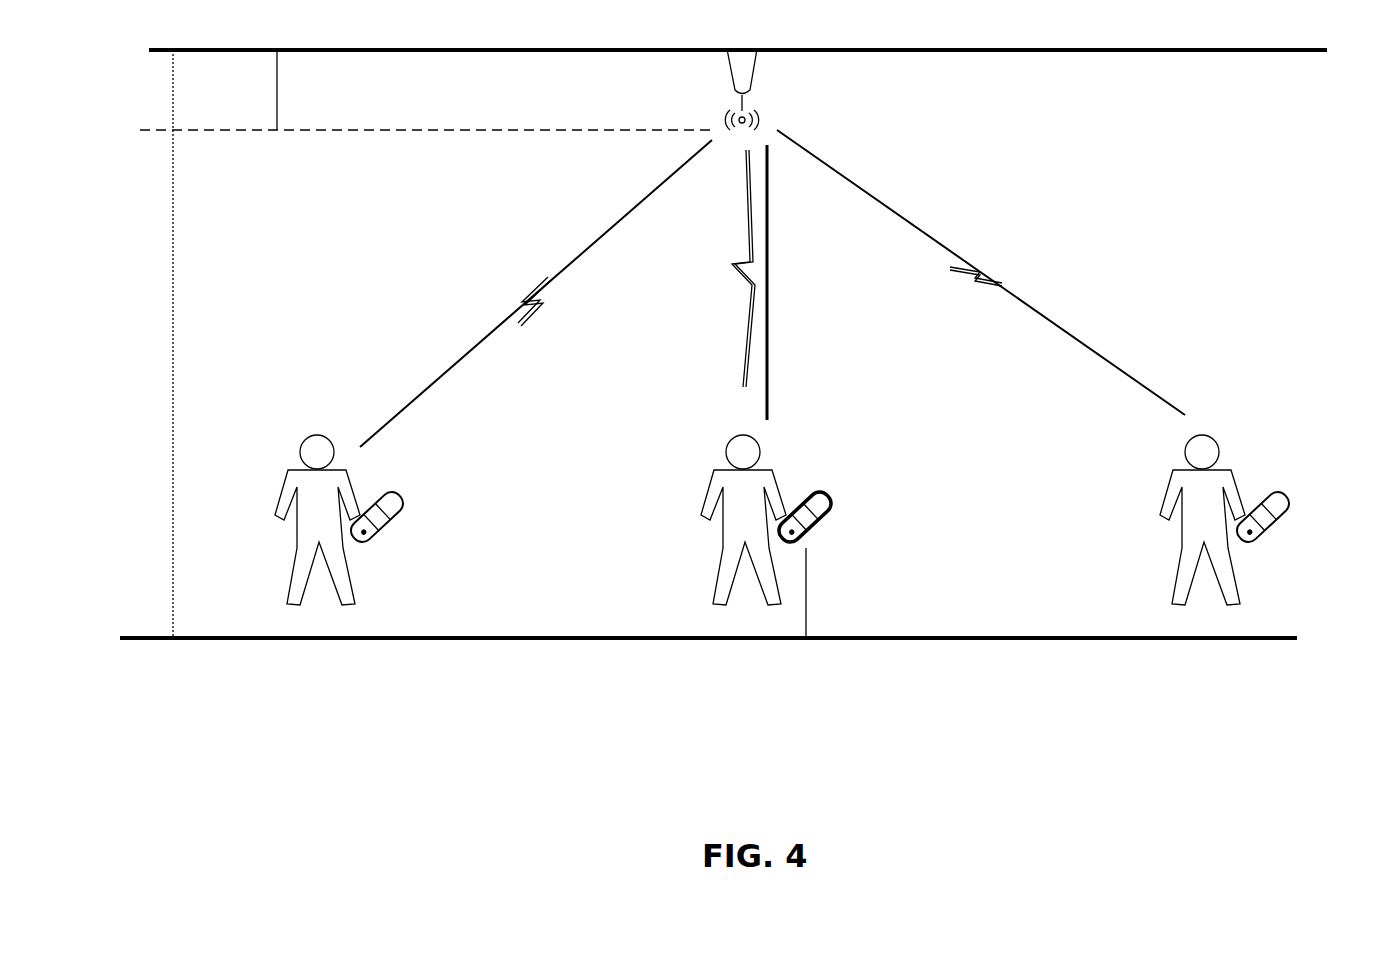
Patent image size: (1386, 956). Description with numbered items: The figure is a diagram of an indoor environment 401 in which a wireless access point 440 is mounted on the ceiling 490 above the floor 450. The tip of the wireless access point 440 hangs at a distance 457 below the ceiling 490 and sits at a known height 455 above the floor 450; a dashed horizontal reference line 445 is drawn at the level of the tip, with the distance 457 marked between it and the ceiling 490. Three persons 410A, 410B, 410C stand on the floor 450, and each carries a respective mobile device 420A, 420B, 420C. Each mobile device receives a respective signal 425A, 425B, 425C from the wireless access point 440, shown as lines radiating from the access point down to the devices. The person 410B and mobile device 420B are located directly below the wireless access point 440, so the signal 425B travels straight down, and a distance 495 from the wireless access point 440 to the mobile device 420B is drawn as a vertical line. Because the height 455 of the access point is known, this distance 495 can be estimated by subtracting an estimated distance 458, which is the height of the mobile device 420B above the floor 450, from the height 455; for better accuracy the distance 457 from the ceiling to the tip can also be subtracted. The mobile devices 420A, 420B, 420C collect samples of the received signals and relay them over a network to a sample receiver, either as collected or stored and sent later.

The ceiling 490 is at (738, 67).
The floor 450 is at (508, 640).
The height 455 is at (146, 344).
The distance 457 is at (305, 90).
The reference plane 445 is at (460, 131).
The wireless access point 440 is at (757, 65).
The indoor environment 401 is at (1153, 226).
The signal 425A is at (536, 293).
The signal 425B is at (714, 268).
The signal 425C is at (981, 272).
The distance 495 is at (767, 325).
The distance 458 is at (836, 593).
The person 410A is at (319, 534).
The person 410B is at (743, 534).
The person 410C is at (1203, 534).
The mobile device 420A is at (408, 522).
The mobile device 420B is at (838, 522).
The mobile device 420C is at (1298, 522).